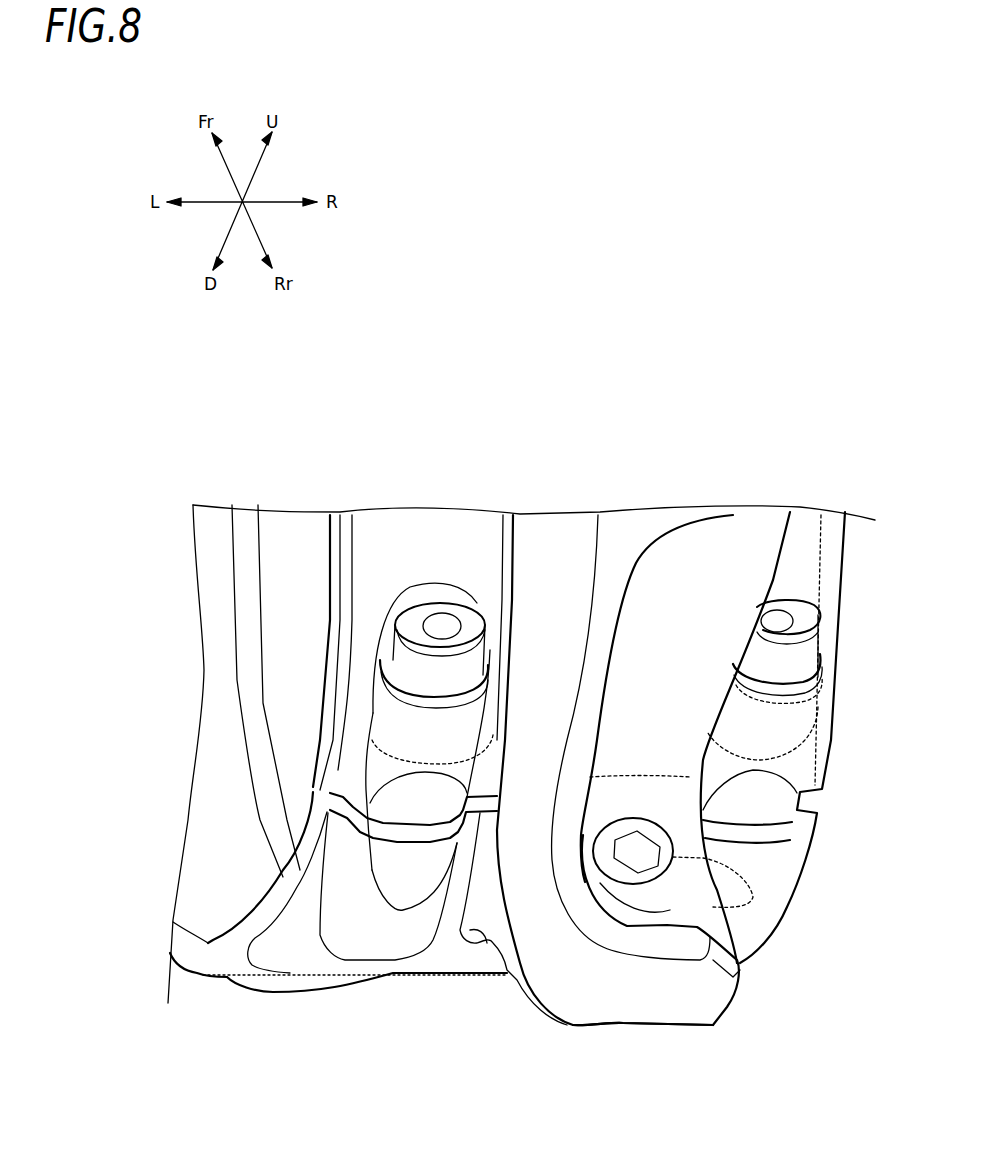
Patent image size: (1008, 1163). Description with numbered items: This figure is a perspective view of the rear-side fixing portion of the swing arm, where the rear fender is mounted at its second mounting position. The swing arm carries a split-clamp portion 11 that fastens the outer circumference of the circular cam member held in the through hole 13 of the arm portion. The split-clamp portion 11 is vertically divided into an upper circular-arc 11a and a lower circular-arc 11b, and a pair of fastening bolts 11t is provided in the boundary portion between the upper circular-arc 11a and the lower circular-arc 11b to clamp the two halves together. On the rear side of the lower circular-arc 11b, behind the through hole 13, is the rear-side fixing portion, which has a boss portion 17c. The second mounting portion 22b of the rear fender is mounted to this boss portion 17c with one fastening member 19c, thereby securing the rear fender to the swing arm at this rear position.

The split-clamp portion 11 is at (310, 782).
The upper circular-arc 11a is at (333, 583).
The lower circular-arc 11b is at (247, 950).
The fastening bolts 11t is at (425, 613).
The through hole 13 is at (256, 801).
The boss portion 17c is at (577, 1030).
The fastening member 19c is at (695, 855).
The second mounting portion 22b is at (667, 597).